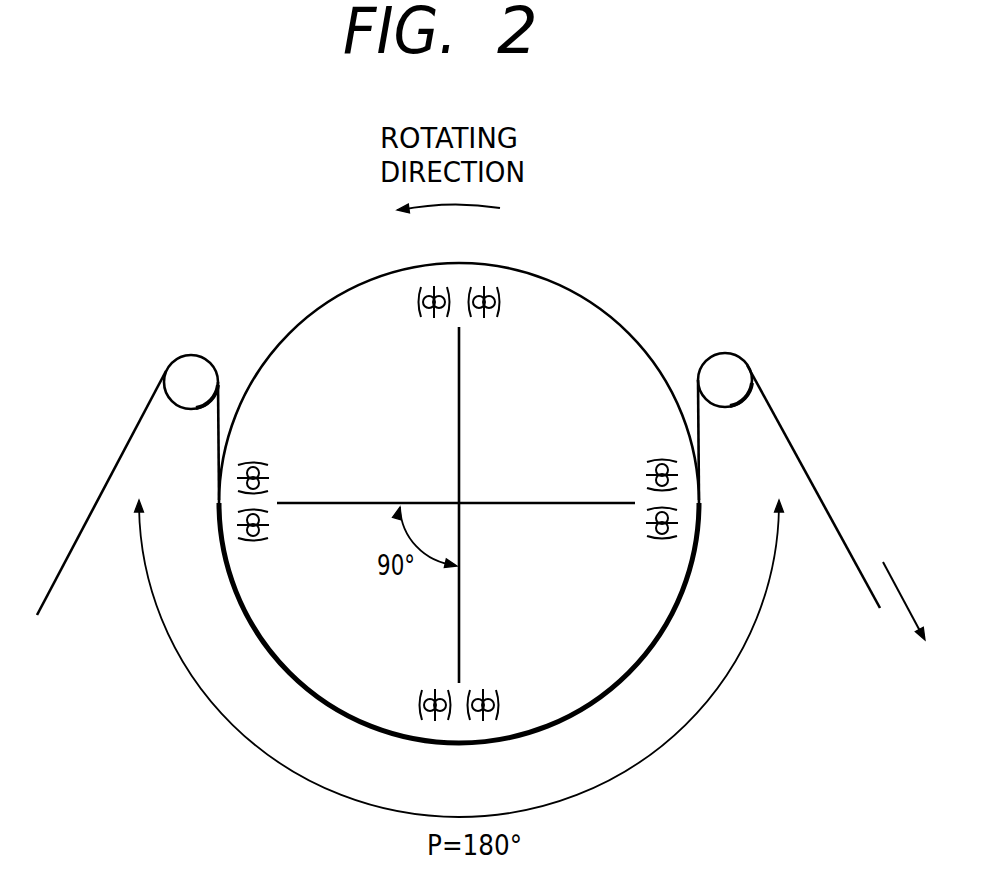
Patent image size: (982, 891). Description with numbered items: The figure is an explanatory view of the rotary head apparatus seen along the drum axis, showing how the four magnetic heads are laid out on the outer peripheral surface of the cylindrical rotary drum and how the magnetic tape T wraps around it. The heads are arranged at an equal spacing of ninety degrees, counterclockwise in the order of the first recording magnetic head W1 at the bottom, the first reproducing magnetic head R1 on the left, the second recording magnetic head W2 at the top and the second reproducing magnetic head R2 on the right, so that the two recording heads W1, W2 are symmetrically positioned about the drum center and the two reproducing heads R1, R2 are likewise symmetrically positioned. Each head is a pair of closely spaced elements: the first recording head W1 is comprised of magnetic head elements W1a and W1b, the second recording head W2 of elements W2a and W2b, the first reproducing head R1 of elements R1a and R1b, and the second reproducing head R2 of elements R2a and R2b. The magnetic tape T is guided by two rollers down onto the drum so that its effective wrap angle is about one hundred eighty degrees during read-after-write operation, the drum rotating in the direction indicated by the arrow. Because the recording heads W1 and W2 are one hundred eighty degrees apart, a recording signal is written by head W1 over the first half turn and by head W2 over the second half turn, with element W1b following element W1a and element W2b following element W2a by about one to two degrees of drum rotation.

The magnetic tape T is at (812, 480).
The second recording magnetic head W2 is at (443, 309).
The magnetic head element W2a is at (430, 318).
The magnetic head element W2b is at (485, 320).
The first recording magnetic head W1 is at (463, 708).
The magnetic head element W1a is at (488, 688).
The magnetic head element W1b is at (430, 688).
The first reproducing magnetic head R1 is at (250, 517).
The magnetic head element R1a is at (272, 528).
The magnetic head element R1b is at (273, 472).
The second reproducing magnetic head R2 is at (636, 421).
The magnetic head element R2a is at (648, 470).
The magnetic head element R2b is at (648, 523).